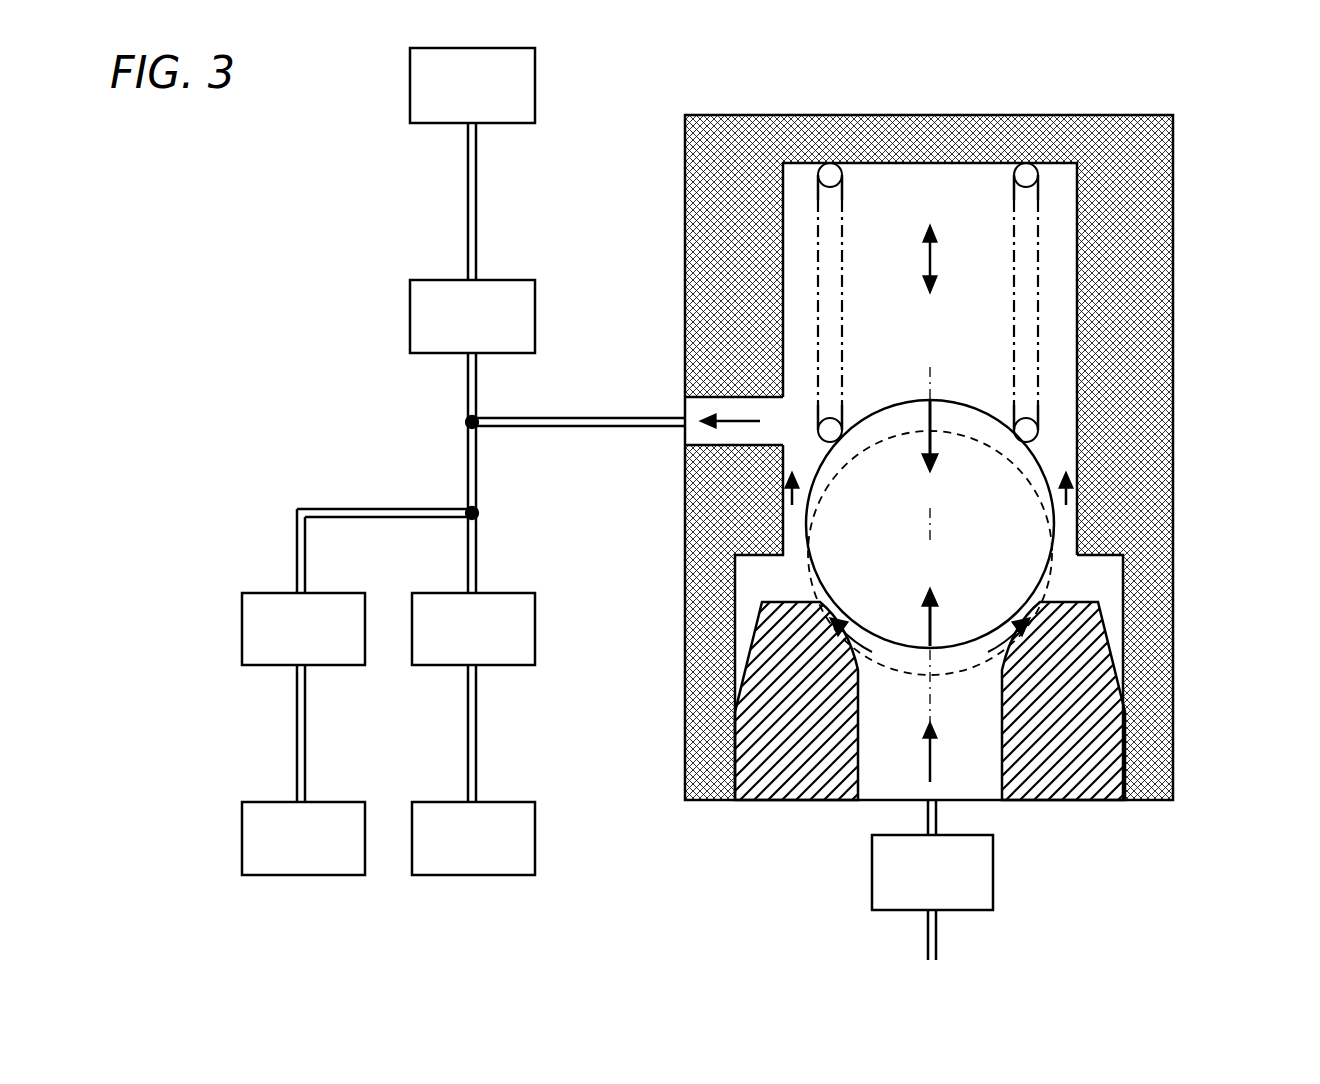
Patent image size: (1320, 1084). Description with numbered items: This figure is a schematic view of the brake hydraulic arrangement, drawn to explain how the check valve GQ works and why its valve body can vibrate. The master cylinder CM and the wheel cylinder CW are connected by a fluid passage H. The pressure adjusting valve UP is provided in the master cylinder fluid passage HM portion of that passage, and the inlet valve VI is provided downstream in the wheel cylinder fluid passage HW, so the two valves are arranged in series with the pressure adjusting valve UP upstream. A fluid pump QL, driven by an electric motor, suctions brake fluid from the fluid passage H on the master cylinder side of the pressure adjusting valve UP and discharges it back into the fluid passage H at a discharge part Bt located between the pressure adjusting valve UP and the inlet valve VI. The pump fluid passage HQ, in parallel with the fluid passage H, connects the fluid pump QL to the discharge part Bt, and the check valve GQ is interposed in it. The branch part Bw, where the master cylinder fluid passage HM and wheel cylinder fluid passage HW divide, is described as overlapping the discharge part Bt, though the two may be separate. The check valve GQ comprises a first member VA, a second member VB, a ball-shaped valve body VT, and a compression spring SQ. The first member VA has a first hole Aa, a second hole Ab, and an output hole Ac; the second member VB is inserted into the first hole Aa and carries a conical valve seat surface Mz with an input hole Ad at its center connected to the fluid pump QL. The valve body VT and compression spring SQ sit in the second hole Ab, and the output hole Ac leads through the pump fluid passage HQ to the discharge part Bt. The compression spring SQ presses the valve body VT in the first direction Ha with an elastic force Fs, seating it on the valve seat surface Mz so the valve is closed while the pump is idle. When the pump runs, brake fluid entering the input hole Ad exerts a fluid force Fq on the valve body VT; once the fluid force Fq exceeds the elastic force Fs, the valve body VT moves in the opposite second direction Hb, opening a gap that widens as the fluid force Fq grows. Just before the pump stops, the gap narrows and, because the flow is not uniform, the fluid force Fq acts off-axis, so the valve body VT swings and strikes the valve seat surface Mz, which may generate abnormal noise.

The master cylinder CM is at (472, 85).
The pressure adjusting valve UP is at (472, 316).
The inlet valve VI is at (388, 629).
The wheel cylinder CW is at (388, 838).
The fluid pump QL is at (932, 880).
The fluid passage H is at (452, 462).
The master cylinder fluid passage HM is at (478, 185).
The wheel cylinder fluid passage HW is at (307, 705).
The pump fluid passage HQ is at (498, 418).
The discharge part Bt is at (464, 420).
The branch part Bw is at (480, 513).
The output hole Ac is at (685, 398).
The check valve GQ is at (713, 114).
The first member VA is at (1147, 353).
The second hole Ab is at (1063, 183).
The first hole Aa is at (1105, 568).
The valve seat surface Mz is at (1042, 595).
The second member VB is at (1160, 717).
The input hole Ad is at (968, 785).
The compression spring SQ is at (845, 300).
The second direction Hb is at (929, 232).
The first direction Ha is at (929, 321).
The valve body VT is at (942, 400).
The elastic force Fs is at (930, 471).
The fluid force Fq is at (930, 591).